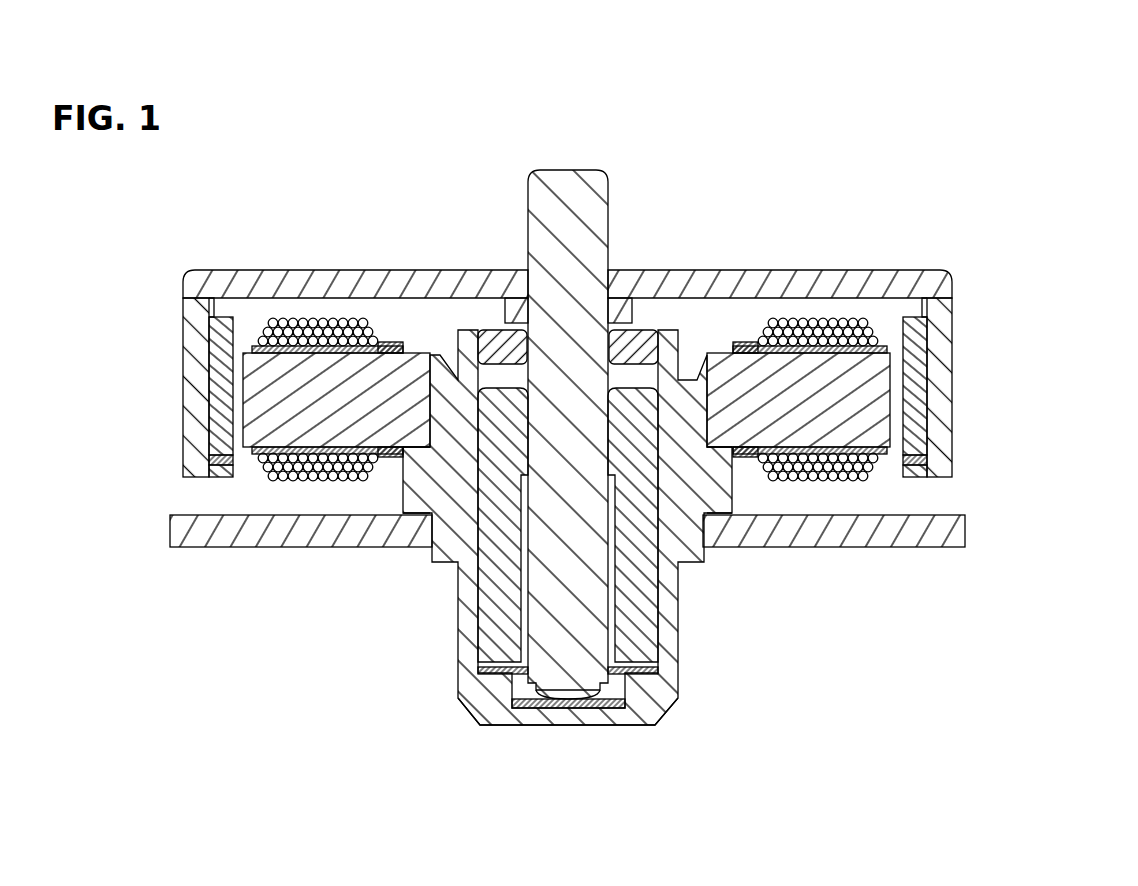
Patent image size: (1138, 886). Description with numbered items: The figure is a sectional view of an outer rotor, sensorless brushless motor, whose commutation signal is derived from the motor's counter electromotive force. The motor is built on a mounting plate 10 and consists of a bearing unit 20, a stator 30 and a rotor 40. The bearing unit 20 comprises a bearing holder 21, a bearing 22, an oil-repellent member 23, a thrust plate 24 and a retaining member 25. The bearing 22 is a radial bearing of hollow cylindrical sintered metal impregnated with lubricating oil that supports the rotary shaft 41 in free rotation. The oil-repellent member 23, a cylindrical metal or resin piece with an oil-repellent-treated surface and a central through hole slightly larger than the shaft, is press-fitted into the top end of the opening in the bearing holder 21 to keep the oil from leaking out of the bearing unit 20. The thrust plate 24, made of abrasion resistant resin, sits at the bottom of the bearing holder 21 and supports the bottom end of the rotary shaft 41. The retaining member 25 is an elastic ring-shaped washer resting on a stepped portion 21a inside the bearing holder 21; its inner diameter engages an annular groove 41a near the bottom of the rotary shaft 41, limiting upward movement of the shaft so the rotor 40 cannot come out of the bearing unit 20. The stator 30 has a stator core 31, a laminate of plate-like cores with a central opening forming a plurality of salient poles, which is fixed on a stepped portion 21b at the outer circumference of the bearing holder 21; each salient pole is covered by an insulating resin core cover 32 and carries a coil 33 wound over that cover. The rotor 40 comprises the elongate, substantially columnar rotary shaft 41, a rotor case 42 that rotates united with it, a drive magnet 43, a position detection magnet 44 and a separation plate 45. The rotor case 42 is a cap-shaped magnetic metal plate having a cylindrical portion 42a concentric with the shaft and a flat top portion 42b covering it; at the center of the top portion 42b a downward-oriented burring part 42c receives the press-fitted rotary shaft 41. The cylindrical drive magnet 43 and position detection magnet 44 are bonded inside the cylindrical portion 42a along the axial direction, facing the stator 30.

The mounting plate 10 is at (933, 527).
The bearing unit 20 is at (418, 706).
The bearing holder 21 is at (668, 607).
The stepped portion 21a is at (650, 688).
The stepped portion 21b is at (722, 472).
The bearing 22 is at (497, 556).
The oil-repellent member 23 is at (633, 340).
The thrust plate 24 is at (560, 710).
The retaining member 25 is at (623, 677).
The stator 30 is at (252, 482).
The stator core 31 is at (273, 388).
The core cover 32 is at (252, 348).
The coil 33 is at (337, 323).
The rotor 40 is at (962, 258).
The rotary shaft 41 is at (570, 182).
The annular groove 41a is at (528, 680).
The rotor case 42 is at (648, 285).
The cylindrical portion 42a is at (943, 347).
The top portion 42b is at (797, 272).
The burring part 42c is at (500, 307).
The drive magnet 43 is at (917, 386).
The position detection magnet 44 is at (920, 470).
The separation plate 45 is at (916, 460).